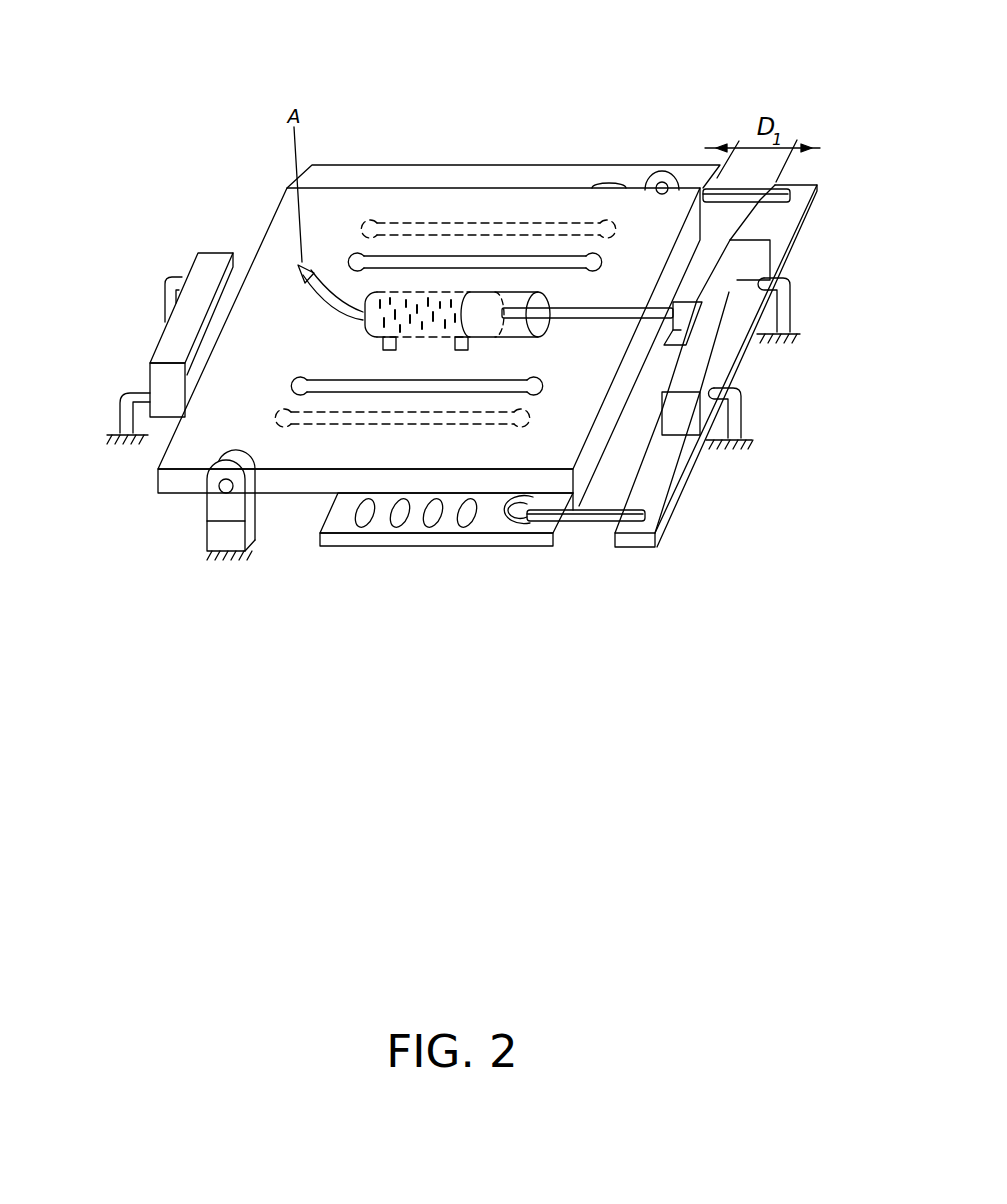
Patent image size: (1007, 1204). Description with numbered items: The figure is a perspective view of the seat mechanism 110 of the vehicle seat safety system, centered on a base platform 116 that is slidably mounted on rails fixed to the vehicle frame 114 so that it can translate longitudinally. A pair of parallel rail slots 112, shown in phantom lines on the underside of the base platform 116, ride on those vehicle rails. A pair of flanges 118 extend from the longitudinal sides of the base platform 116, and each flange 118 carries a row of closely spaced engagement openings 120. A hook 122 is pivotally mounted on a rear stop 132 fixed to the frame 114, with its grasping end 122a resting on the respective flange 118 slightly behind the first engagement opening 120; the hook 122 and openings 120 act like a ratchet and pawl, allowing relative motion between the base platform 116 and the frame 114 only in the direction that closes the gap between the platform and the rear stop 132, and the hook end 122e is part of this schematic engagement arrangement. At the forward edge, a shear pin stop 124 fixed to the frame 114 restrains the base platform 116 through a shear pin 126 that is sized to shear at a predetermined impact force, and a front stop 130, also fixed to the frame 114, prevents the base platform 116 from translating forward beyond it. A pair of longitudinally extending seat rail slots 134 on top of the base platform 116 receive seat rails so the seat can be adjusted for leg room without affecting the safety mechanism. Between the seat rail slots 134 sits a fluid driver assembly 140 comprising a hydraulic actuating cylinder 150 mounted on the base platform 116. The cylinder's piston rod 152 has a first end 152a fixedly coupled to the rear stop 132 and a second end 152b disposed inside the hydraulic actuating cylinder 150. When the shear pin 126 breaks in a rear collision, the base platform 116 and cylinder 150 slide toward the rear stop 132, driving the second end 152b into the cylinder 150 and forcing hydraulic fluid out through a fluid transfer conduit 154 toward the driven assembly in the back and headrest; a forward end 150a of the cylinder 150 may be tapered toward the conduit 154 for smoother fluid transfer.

The seat mechanism 110 is at (246, 104).
The rail slots 112 is at (413, 230).
The frame 114 is at (735, 417).
The base platform 116 is at (278, 227).
The flanges 118 is at (440, 164).
The engagement openings 120 is at (611, 184).
The hook 122 is at (716, 188).
The grasping end 122a is at (662, 172).
The pin slot 122e is at (500, 522).
The shear pin stop 124 is at (213, 512).
The shear pin 126 is at (220, 486).
The front stop 130 is at (165, 374).
The rear stop 132 is at (763, 265).
The seat rail slots 134 is at (470, 262).
The fluid driver assembly 140 is at (365, 322).
The hydraulic actuating cylinder 150 is at (393, 309).
The forward end 150a is at (366, 293).
The piston rod 152 is at (632, 310).
The first end 152a is at (658, 318).
The second end 152b is at (486, 310).
The fluid transfer conduit 154 is at (362, 301).